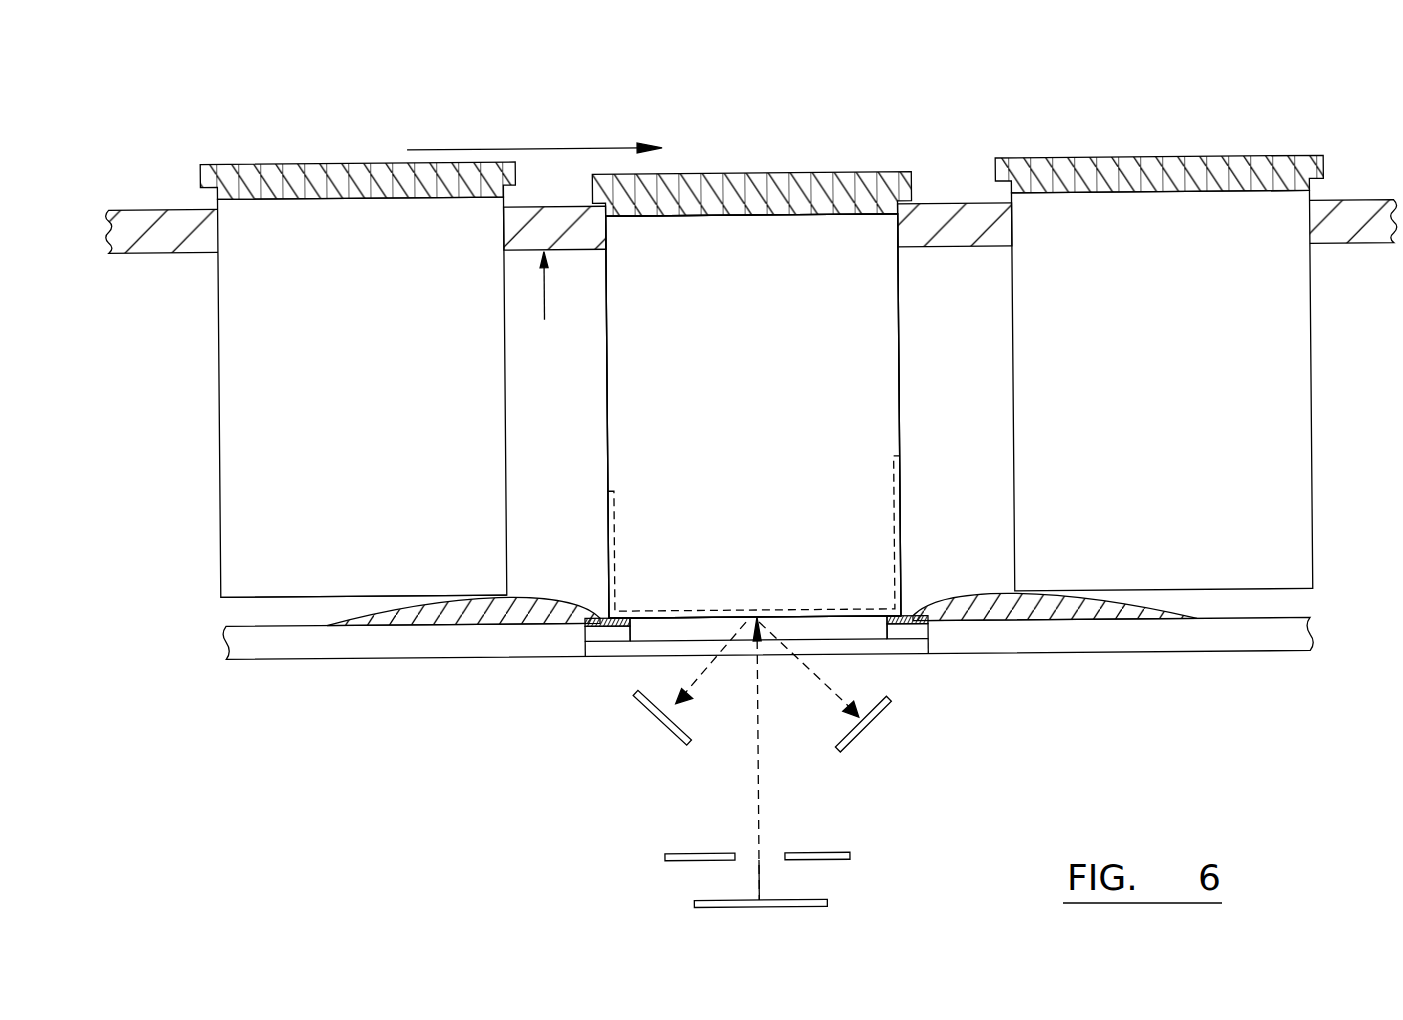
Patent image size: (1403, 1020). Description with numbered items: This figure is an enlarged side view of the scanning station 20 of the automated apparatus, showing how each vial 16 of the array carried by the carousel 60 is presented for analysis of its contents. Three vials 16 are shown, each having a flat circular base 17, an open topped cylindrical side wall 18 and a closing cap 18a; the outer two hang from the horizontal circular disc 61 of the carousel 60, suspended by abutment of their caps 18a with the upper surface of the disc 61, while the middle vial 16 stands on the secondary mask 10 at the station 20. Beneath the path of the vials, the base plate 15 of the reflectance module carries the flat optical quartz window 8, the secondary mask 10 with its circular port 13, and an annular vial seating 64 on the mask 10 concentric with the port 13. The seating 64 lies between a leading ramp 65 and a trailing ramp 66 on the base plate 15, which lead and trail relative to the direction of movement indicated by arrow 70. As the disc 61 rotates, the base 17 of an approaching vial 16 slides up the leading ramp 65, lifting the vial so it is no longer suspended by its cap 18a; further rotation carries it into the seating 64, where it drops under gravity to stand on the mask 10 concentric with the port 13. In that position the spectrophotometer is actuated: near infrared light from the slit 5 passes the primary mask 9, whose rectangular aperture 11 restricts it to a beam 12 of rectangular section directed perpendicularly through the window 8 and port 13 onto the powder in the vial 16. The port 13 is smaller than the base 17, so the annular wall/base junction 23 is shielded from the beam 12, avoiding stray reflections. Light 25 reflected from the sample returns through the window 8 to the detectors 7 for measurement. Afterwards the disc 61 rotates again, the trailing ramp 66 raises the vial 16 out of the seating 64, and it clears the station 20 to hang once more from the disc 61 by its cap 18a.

The slit 5 is at (692, 903).
The detectors 7 is at (663, 722).
The optical quartz window 8 is at (870, 653).
The primary mask 9 is at (678, 853).
The secondary mask 10 is at (610, 636).
The rectangular aperture 11 is at (778, 857).
The beam 12 is at (760, 785).
The circular port 13 is at (630, 635).
The base plate 15 is at (465, 642).
The vial 16 is at (343, 435).
The vial base 17 is at (276, 603).
The cylindrical side wall 18 is at (607, 418).
The cap 18a is at (300, 182).
The scanning station 20 is at (731, 127).
The wall/base junction 23 is at (618, 607).
The reflected light 25 is at (703, 673).
The carousel 60 is at (550, 300).
The circular disc 61 is at (942, 222).
The annular vial seating 64 is at (605, 617).
The leading ramp 65 is at (547, 610).
The trailing ramp 66 is at (968, 607).
The direction arrow 70 is at (535, 148).